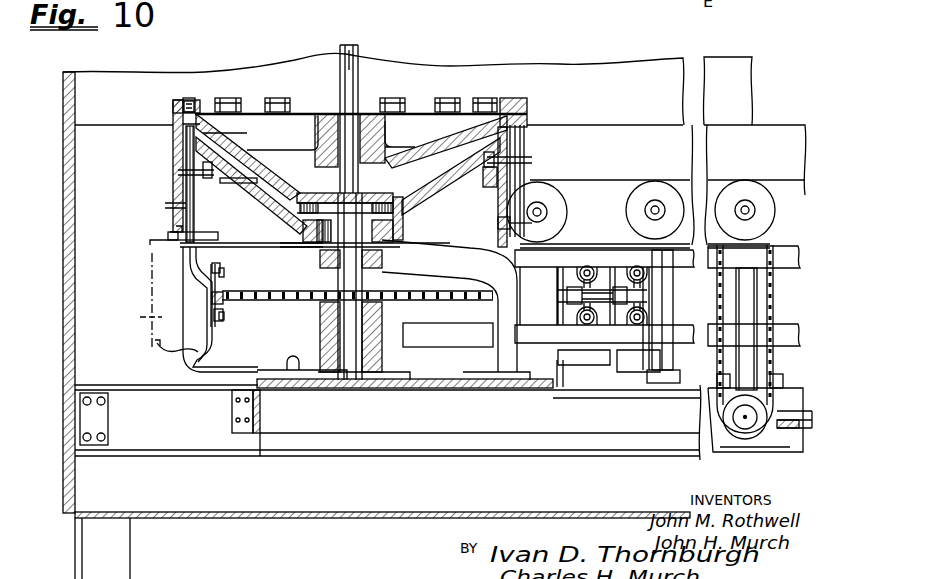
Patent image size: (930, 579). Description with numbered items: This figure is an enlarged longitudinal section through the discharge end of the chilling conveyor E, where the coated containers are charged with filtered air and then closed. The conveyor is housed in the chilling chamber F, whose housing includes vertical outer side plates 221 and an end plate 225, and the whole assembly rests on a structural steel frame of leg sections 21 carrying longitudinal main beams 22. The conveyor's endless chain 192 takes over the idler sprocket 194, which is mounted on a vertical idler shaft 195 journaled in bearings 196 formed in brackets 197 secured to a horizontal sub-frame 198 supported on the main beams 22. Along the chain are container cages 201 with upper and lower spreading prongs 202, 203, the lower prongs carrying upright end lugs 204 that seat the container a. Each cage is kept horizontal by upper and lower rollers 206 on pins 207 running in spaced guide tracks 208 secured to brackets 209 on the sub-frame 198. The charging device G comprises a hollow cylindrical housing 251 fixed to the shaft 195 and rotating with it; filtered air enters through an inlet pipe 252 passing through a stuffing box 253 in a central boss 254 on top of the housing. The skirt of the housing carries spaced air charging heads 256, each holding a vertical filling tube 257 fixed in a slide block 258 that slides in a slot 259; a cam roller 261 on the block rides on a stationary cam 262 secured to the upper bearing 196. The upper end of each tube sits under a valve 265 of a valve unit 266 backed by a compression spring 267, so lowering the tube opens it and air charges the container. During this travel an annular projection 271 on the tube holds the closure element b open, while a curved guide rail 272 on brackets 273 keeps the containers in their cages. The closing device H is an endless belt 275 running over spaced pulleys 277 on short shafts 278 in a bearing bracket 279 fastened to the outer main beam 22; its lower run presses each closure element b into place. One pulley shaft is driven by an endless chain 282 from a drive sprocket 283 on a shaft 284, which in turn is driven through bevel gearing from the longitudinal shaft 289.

The leg sections 21 is at (113, 550).
The main beams 22 is at (330, 530).
The endless chain 192 is at (225, 300).
The sprocket 194 is at (410, 299).
The idler shaft 195 is at (345, 338).
The bearings 196 is at (322, 262).
The brackets 197 is at (398, 373).
The sub-frame 198 is at (460, 437).
The container cages 201 is at (208, 286).
The upper prongs 202 is at (239, 307).
The lower prongs 203 is at (178, 352).
The end lugs 204 is at (160, 348).
The rollers 206 is at (222, 268).
The pins 207 is at (224, 274).
The guide tracks 208 is at (657, 296).
The brackets 209 is at (664, 312).
The outer side plates 221 is at (625, 392).
The end plate 225 is at (560, 385).
The hollow cylindrical housing 251 is at (405, 125).
The inlet pipe 252 is at (360, 72).
The stuffing box 253 is at (346, 70).
The boss 254 is at (338, 110).
The air charging heads 256 is at (533, 118).
The filling tube 257 is at (180, 205).
The slide block 258 is at (176, 173).
The slot 259 is at (172, 158).
The cam roller 261 is at (322, 177).
The stationary cam 262 is at (264, 212).
The valve 265 is at (185, 124).
The valve unit 266 is at (200, 106).
The compression spring 267 is at (180, 106).
The annular projection 271 is at (168, 222).
The curved guide rail 272 is at (152, 242).
The brackets 273 is at (194, 382).
The endless belt 275 is at (589, 180).
The pulleys 277 is at (560, 205).
The short shafts 278 is at (540, 206).
The bearing bracket 279 is at (567, 327).
The endless chain 282 is at (771, 276).
The drive sprocket 283 is at (758, 442).
The shaft 284 is at (745, 430).
The shaft 289 is at (786, 410).
The container a is at (158, 276).
The closure element b is at (175, 231).
The chilling conveyor E is at (158, 318).
The chilling chamber F is at (112, 131).
The charging device G is at (262, 87).
The closing device H is at (628, 183).